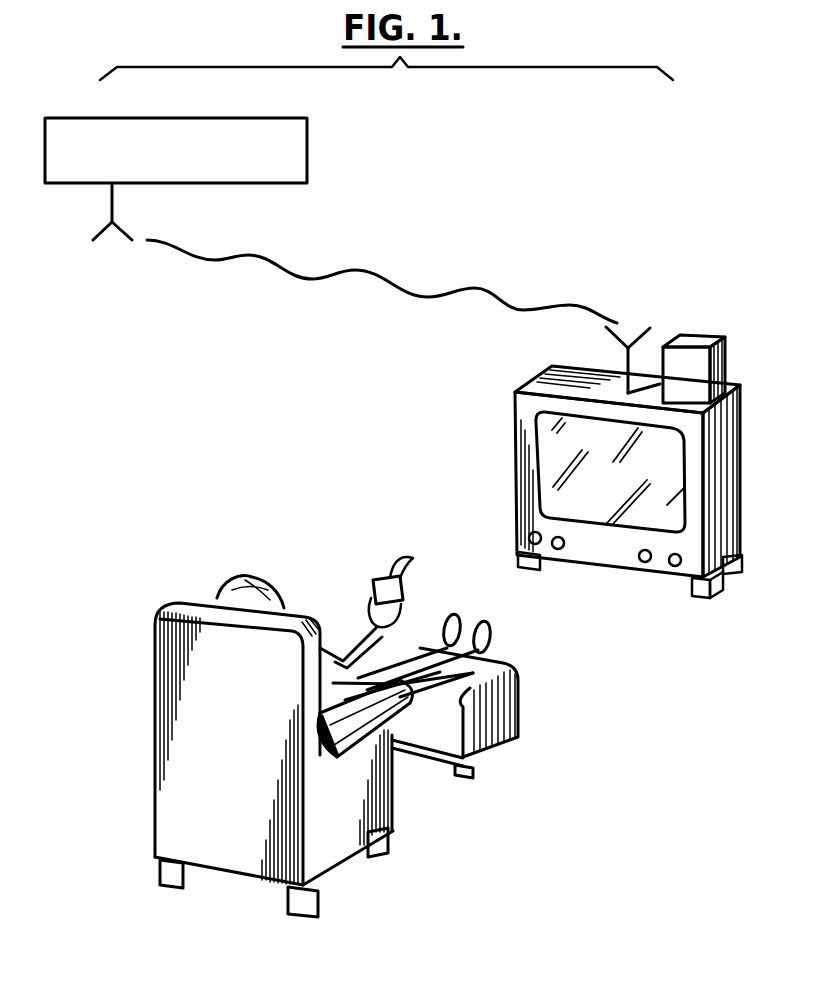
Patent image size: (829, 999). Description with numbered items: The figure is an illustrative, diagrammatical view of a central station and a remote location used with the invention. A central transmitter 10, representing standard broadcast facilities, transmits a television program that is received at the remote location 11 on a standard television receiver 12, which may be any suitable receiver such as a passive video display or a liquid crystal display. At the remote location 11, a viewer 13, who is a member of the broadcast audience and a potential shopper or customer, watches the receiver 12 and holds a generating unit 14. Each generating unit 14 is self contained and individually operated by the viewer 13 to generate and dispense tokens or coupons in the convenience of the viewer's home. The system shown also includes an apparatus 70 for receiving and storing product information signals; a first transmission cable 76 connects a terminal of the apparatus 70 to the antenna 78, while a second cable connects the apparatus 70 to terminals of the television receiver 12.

The central transmitter 10 is at (307, 153).
The remote location 11 is at (700, 309).
The television receiver 12 is at (514, 415).
The viewer 13 is at (233, 585).
The generating unit 14 is at (373, 583).
The apparatus for receiving and storing product information signals 70 is at (713, 367).
The first transmission cable 76 is at (647, 391).
The antenna 78 is at (622, 348).